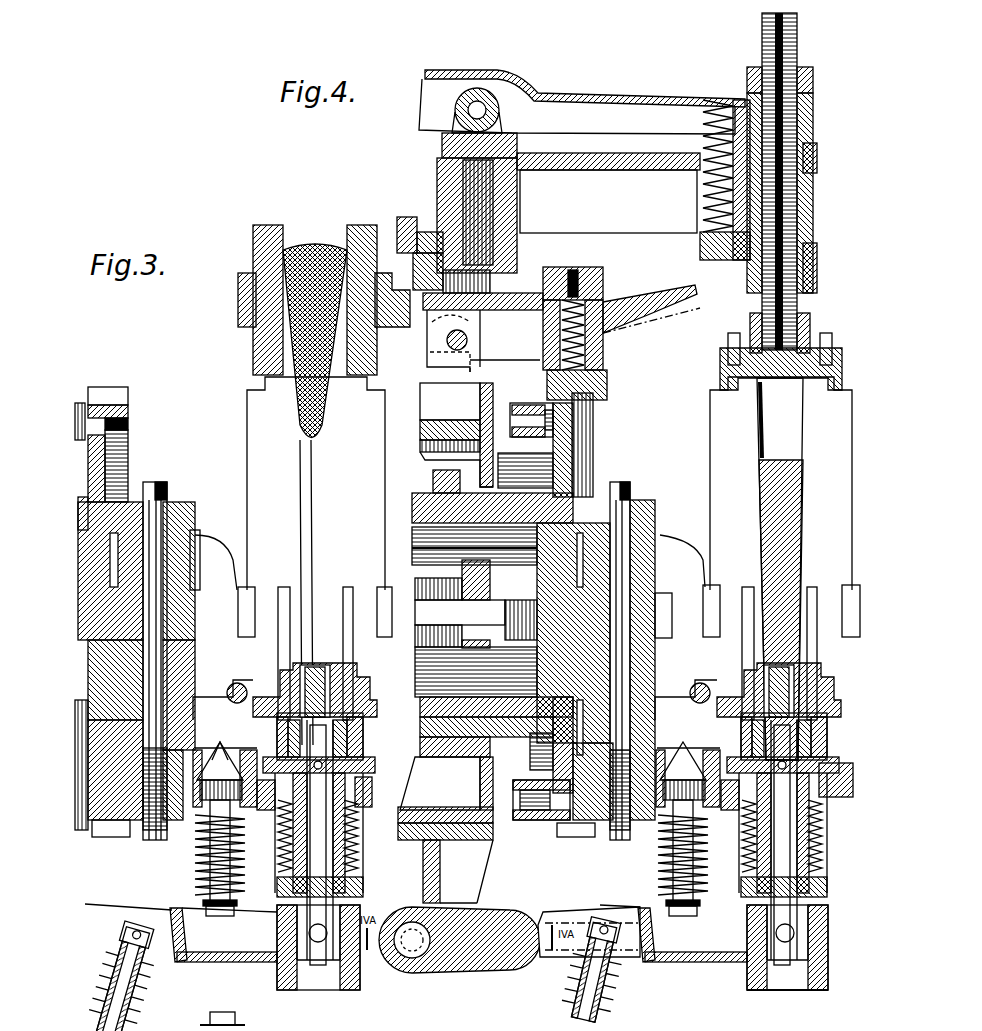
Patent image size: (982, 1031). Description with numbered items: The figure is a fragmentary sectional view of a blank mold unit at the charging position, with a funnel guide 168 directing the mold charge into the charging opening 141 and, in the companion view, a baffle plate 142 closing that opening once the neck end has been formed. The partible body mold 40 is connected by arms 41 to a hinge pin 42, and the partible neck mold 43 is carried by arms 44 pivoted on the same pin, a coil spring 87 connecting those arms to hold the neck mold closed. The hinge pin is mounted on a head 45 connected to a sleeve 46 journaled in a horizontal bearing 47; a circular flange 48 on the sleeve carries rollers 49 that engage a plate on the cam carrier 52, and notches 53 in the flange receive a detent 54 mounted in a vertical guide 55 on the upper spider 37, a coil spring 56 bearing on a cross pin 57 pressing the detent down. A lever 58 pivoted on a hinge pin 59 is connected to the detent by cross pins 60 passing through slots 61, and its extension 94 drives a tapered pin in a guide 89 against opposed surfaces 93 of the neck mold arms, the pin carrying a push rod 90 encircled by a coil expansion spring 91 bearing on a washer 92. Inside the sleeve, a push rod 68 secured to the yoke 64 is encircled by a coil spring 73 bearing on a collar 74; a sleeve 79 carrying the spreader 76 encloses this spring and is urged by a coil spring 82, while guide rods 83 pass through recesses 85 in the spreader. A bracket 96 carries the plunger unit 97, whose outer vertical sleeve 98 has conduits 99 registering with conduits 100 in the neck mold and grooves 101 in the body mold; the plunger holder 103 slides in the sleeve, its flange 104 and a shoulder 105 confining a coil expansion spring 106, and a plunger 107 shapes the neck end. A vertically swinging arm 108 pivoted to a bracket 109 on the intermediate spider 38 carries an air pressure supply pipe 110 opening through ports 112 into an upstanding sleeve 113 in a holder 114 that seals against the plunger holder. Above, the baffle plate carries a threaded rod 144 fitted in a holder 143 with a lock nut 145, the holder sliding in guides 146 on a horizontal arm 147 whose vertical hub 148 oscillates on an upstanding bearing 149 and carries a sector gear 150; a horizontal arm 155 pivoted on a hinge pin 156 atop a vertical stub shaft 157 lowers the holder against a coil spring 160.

In FIG. 4, the horizontal arm 155 is at (527, 90).
In FIG. 4, the hinge pin 156 is at (462, 104).
In FIG. 4, the vertical stub shaft 157 is at (520, 150).
In FIG. 4, the vertical hub 148 is at (500, 196).
In FIG. 4, the upstanding bearing 149 is at (505, 222).
In FIG. 4, the sector gear 150 is at (400, 217).
In FIG. 4, the horizontal arm 147 is at (672, 162).
In FIG. 4, the coil spring 160 is at (703, 124).
In FIG. 4, the threaded rod 144 is at (798, 40).
In FIG. 4, the lock nut 145 is at (813, 75).
In FIG. 4, the guides 146 is at (817, 158).
In FIG. 4, the holder 143 is at (813, 192).
In FIG. 3, the funnel guide 168 is at (250, 232).
In FIG. 3, the partible body mold 40 is at (262, 440).
In FIG. 3, the conduits 101 is at (348, 600).
In FIG. 3, the charging opening 141 is at (822, 342).
In FIG. 3, the baffle plate 142 is at (722, 372).
In FIG. 3, the notches 53 is at (112, 392).
In FIG. 3, the hinge pin 42 is at (167, 497).
In FIG. 3, the arms 41 is at (210, 540).
In FIG. 3, the head 45 is at (598, 495).
In FIG. 3, the cam carrier 52 is at (425, 412).
In FIG. 3, the lever 58 is at (432, 365).
In FIG. 3, the rollers 49 is at (522, 403).
In FIG. 3, the circular flange 48 is at (594, 428).
In FIG. 3, the detent 54 is at (595, 388).
In FIG. 3, the upper spider 37 is at (505, 312).
In FIG. 3, the horizontal hinge pin 59 is at (447, 343).
In FIG. 3, the vertical guide 55 is at (603, 275).
In FIG. 3, the cross pin 57 is at (573, 270).
In FIG. 3, the coil spring 56 is at (603, 295).
In FIG. 3, the extension 94 is at (697, 290).
In FIG. 3, the guide rods 83 is at (414, 540).
In FIG. 3, the sleeve 79 is at (414, 552).
In FIG. 3, the cross pins 60 is at (480, 570).
In FIG. 3, the coil spring 73 is at (414, 590).
In FIG. 3, the push rod 68 is at (476, 620).
In FIG. 3, the coil spring 82 is at (414, 642).
In FIG. 3, the collar 74 is at (478, 652).
In FIG. 3, the slots 61 is at (430, 672).
In FIG. 3, the spreader 76 is at (460, 670).
In FIG. 3, the recesses 85 is at (495, 670).
In FIG. 3, the yoke 64 is at (520, 672).
In FIG. 3, the sleeve 46 is at (420, 705).
In FIG. 3, the horizontal bearing 47 is at (420, 746).
In FIG. 3, the partible neck mold 43 is at (370, 694).
In FIG. 3, the plunger 107 is at (322, 667).
In FIG. 3, the conduits 99 is at (352, 740).
In FIG. 3, the plunger unit 97 is at (375, 760).
In FIG. 3, the bracket 96 is at (366, 798).
In FIG. 3, the coil expansion spring 106 is at (280, 838).
In FIG. 3, the flange 104 is at (278, 888).
In FIG. 3, the plunger holder 103 is at (275, 805).
In FIG. 3, the shoulder 105 is at (845, 792).
In FIG. 3, the outer vertical sleeve 98 is at (822, 818).
In FIG. 3, the conduits 100 is at (722, 693).
In FIG. 3, the guide 89 is at (712, 757).
In FIG. 3, the opposed surfaces 93 is at (683, 745).
In FIG. 3, the push rod 90 is at (210, 845).
In FIG. 3, the coil expansion spring 91 is at (198, 865).
In FIG. 3, the washer 92 is at (700, 904).
In FIG. 3, the coil spring 87 is at (240, 683).
In FIG. 3, the arms 44 is at (245, 712).
In FIG. 3, the intermediate spider 38 is at (440, 810).
In FIG. 3, the bracket 109 is at (470, 887).
In FIG. 3, the air pressure supply pipe 110 is at (595, 905).
In FIG. 3, the vertically swinging arm 108 is at (215, 975).
In FIG. 3, the upstanding sleeve 113 is at (275, 972).
In FIG. 3, the ports 112 is at (800, 933).
In FIG. 3, the holder 114 is at (746, 988).